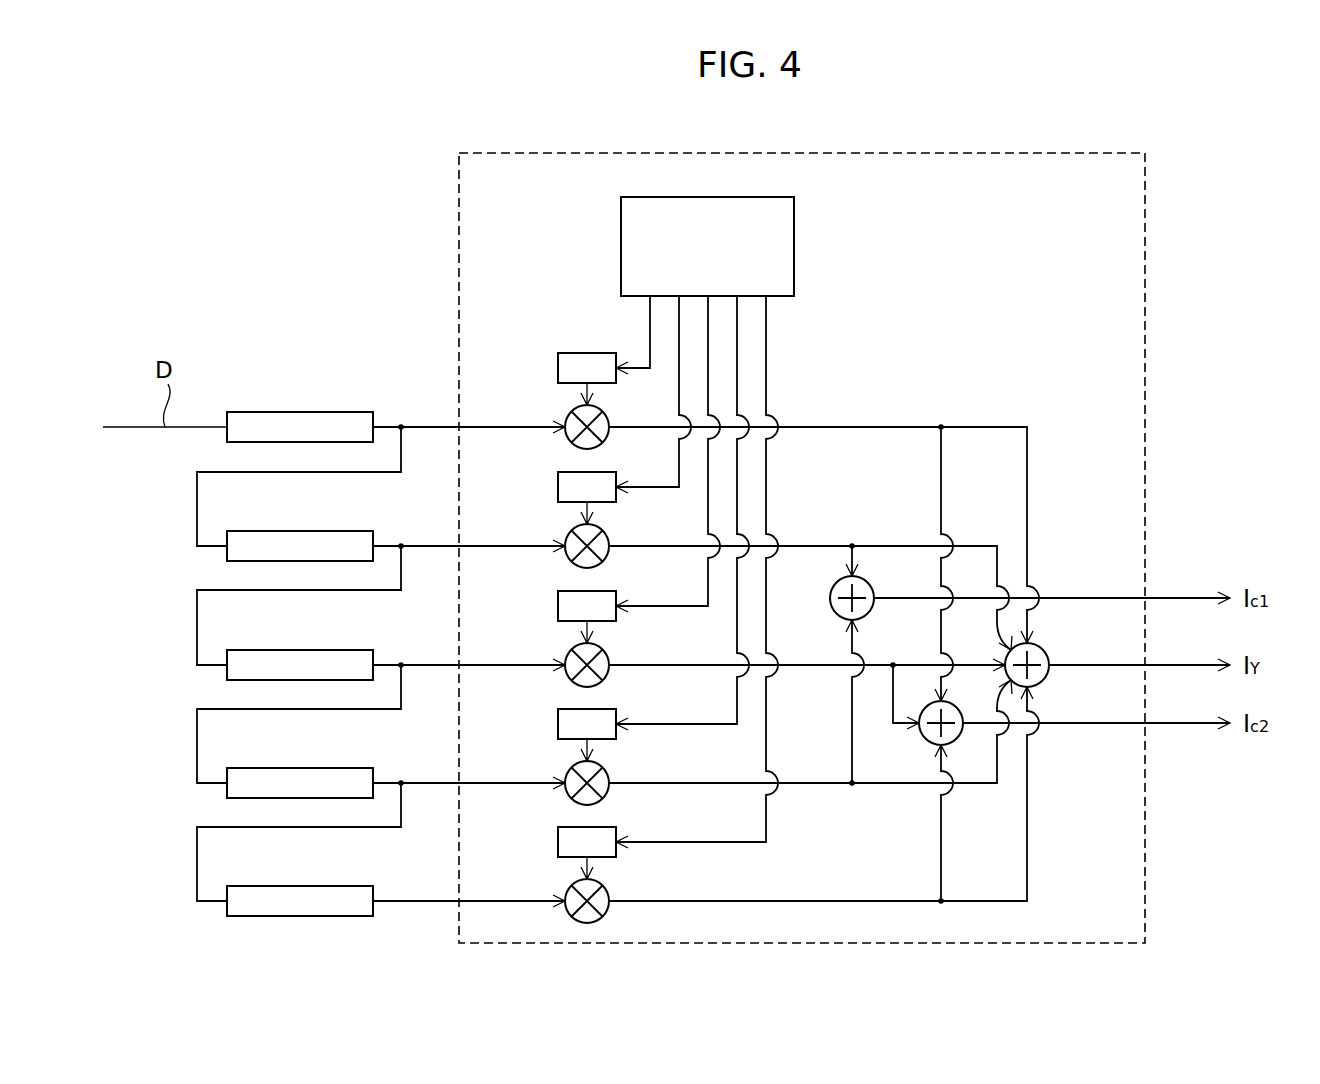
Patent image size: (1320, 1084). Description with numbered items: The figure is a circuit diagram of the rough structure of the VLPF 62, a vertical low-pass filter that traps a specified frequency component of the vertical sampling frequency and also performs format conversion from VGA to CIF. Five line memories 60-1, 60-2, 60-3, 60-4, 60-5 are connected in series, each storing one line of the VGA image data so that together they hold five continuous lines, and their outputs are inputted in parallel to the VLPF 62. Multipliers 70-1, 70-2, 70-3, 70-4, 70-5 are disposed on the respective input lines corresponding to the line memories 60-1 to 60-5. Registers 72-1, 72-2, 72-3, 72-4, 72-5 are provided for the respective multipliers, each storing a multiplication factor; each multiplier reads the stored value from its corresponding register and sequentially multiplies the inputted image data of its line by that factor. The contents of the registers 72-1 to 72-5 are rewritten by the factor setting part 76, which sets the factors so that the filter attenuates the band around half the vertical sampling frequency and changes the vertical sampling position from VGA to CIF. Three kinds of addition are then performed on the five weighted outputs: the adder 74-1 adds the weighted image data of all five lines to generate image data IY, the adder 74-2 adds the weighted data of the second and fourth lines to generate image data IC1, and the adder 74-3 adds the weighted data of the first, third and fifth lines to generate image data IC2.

The VLPF 62 is at (1145, 340).
The factor setting part 76 is at (794, 270).
The line memory 60-1 is at (335, 413).
The line memory 60-2 is at (335, 532).
The line memory 60-3 is at (335, 651).
The line memory 60-4 is at (335, 769).
The line memory 60-5 is at (335, 887).
The multiplier 70-1 is at (609, 418).
The multiplier 70-2 is at (609, 537).
The multiplier 70-3 is at (609, 656).
The multiplier 70-4 is at (609, 774).
The multiplier 70-5 is at (609, 892).
The register 72-1 is at (556, 368).
The register 72-2 is at (556, 487).
The register 72-3 is at (556, 606).
The register 72-4 is at (556, 724).
The register 72-5 is at (556, 842).
The adder 74-1 is at (1066, 652).
The adder 74-2 is at (832, 608).
The adder 74-3 is at (925, 739).